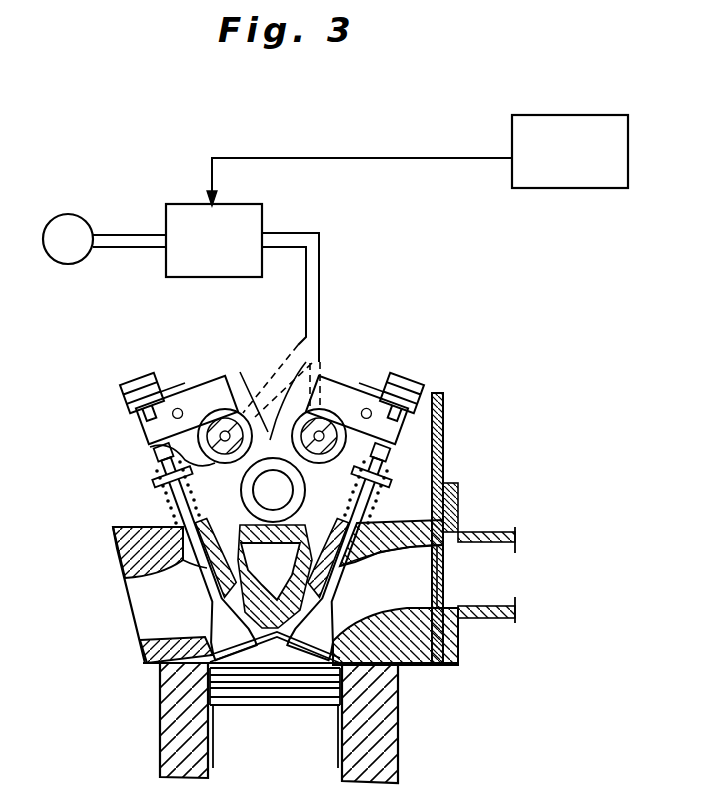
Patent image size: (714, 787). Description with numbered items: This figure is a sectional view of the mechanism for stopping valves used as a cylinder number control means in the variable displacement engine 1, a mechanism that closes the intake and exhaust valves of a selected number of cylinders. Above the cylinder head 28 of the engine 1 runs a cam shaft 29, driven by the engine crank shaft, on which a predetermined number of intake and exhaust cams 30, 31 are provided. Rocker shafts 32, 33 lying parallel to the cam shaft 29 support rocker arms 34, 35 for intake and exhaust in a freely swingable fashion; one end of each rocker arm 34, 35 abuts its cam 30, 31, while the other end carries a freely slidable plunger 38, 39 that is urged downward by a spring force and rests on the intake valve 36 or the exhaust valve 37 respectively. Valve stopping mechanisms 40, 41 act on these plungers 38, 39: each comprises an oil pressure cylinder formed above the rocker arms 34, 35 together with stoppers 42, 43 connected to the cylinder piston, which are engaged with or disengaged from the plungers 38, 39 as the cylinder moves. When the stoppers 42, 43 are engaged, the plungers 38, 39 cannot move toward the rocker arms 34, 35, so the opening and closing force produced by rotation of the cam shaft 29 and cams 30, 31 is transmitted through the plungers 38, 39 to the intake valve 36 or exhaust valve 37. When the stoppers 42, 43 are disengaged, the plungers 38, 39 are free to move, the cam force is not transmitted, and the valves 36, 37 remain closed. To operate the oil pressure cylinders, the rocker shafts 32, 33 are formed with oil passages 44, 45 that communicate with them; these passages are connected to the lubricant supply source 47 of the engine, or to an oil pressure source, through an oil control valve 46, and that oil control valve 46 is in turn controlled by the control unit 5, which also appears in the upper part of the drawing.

The variable displacement engine 1 is at (412, 761).
The control unit 5 is at (569, 115).
The cylinder head 28 is at (427, 668).
The cam shaft 29 is at (290, 490).
The intake cam 30 is at (298, 513).
The exhaust cam 31 is at (222, 499).
The intake rocker shaft 32 is at (453, 528).
The exhaust rocker shaft 33 is at (194, 480).
The intake rocker arm 34 is at (335, 372).
The exhaust rocker arm 35 is at (205, 388).
The intake valve 36 is at (380, 501).
The exhaust valve 37 is at (165, 504).
The intake plunger 38 is at (392, 452).
The exhaust plunger 39 is at (150, 456).
The intake valve stopping mechanism 40 is at (377, 374).
The exhaust valve stopping mechanism 41 is at (171, 376).
The intake stopper 42 is at (390, 378).
The exhaust stopper 43 is at (162, 380).
The oil passage 44 is at (340, 395).
The oil passage 45 is at (240, 380).
The oil control valve 46 is at (262, 213).
The lubricant supply source 47 is at (60, 214).